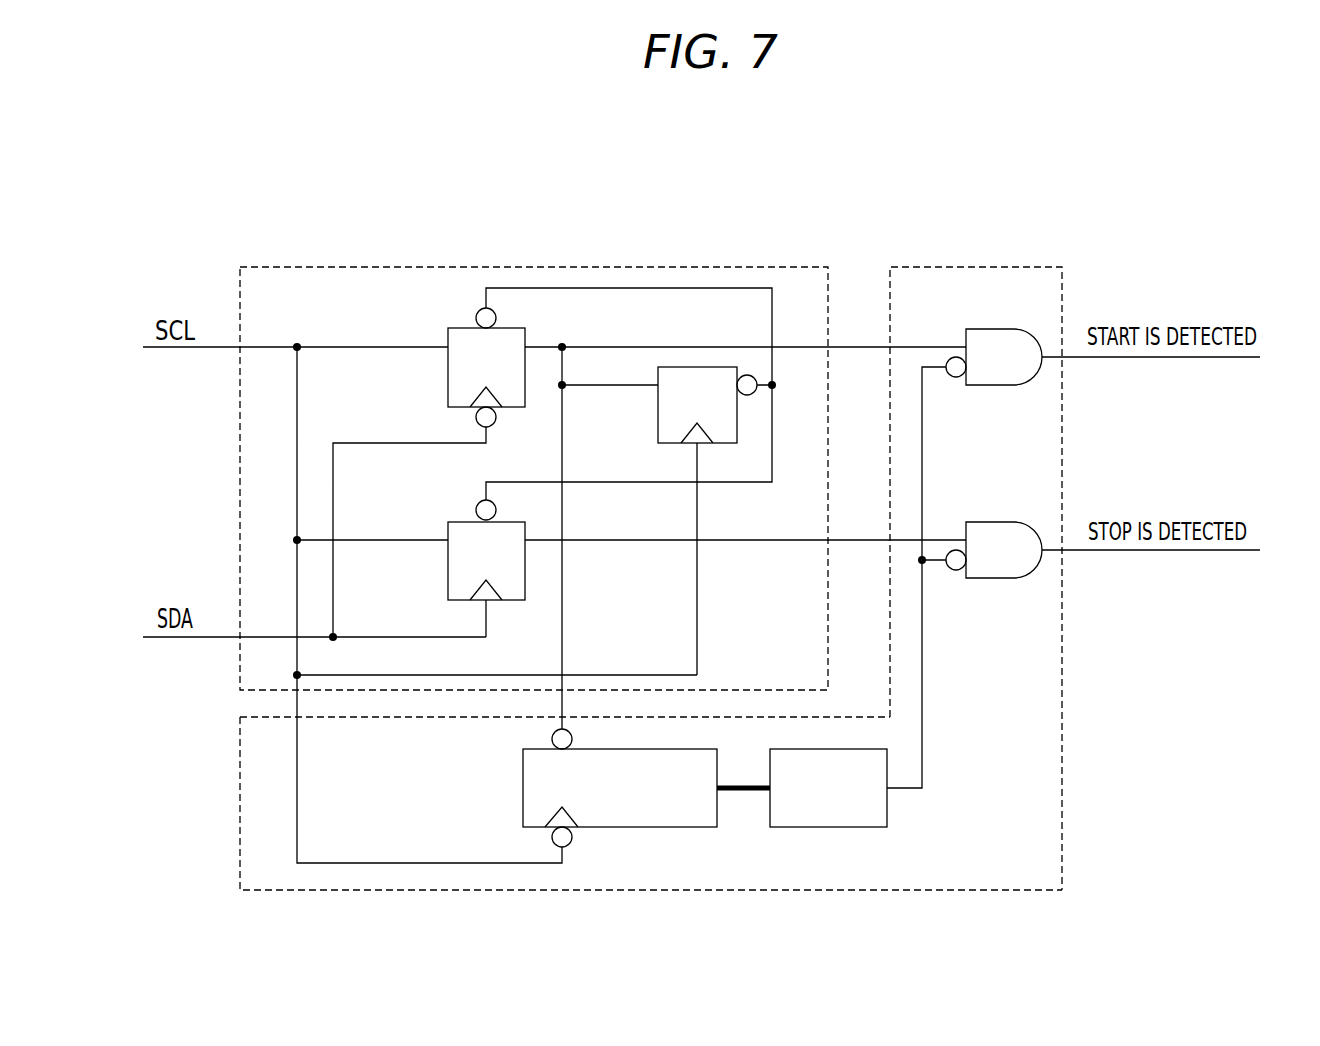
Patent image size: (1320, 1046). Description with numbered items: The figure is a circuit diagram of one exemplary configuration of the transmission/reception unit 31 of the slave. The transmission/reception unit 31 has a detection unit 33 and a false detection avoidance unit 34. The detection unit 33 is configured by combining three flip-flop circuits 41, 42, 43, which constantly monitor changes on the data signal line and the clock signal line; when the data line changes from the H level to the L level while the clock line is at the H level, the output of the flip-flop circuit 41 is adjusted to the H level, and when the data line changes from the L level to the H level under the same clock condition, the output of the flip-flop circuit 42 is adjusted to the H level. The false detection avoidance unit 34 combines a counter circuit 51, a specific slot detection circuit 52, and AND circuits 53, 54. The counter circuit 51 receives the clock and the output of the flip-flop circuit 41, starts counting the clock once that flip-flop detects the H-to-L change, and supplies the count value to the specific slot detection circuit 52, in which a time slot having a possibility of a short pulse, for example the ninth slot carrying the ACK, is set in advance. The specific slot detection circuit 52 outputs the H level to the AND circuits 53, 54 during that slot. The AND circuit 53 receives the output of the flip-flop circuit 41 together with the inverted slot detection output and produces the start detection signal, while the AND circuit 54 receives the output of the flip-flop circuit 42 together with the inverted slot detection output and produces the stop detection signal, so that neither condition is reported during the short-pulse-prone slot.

The transmission/reception unit 31 is at (267, 205).
The detection unit 33 is at (530, 266).
The false detection avoidance unit 34 is at (972, 266).
The flip-flop circuit 41 is at (448, 380).
The flip-flop circuit 42 is at (448, 572).
The flip-flop circuit 43 is at (658, 415).
The counter circuit 51 is at (523, 787).
The specific slot detection circuit 52 is at (827, 829).
The AND circuit 53 is at (993, 387).
The AND circuit 54 is at (993, 580).